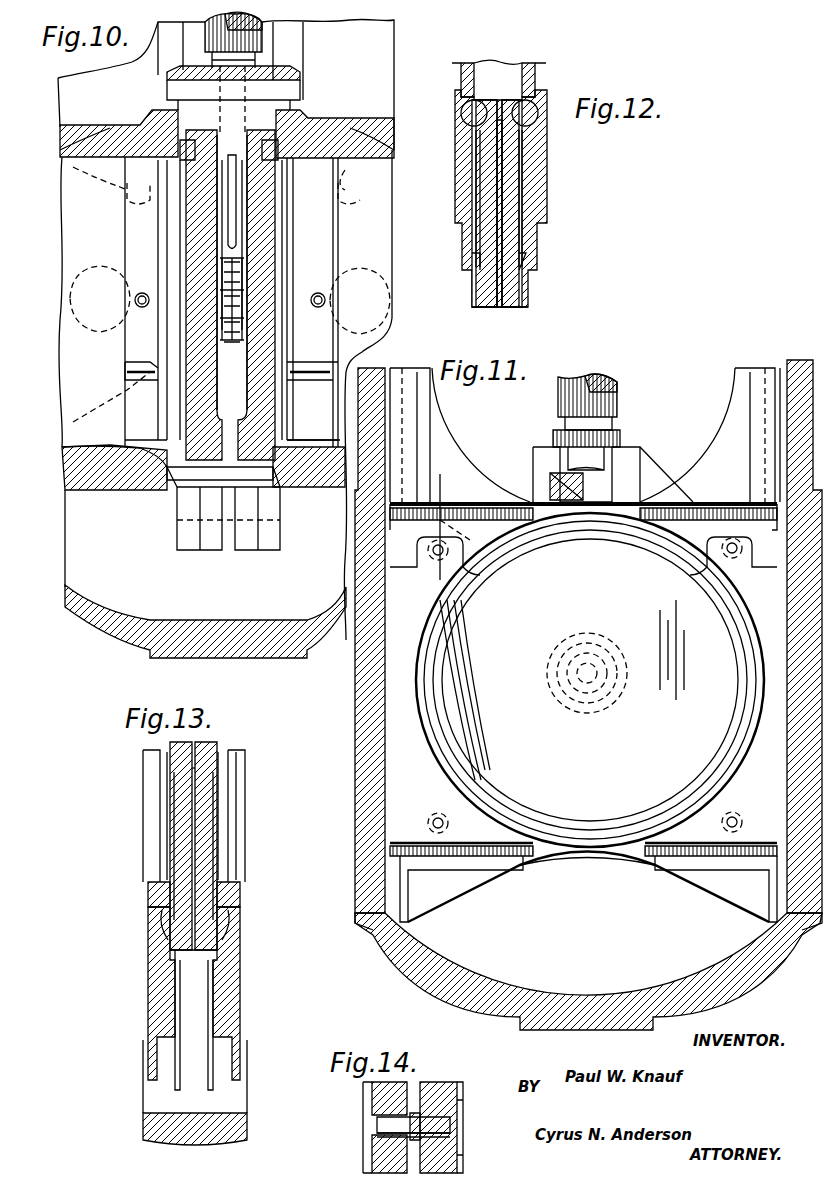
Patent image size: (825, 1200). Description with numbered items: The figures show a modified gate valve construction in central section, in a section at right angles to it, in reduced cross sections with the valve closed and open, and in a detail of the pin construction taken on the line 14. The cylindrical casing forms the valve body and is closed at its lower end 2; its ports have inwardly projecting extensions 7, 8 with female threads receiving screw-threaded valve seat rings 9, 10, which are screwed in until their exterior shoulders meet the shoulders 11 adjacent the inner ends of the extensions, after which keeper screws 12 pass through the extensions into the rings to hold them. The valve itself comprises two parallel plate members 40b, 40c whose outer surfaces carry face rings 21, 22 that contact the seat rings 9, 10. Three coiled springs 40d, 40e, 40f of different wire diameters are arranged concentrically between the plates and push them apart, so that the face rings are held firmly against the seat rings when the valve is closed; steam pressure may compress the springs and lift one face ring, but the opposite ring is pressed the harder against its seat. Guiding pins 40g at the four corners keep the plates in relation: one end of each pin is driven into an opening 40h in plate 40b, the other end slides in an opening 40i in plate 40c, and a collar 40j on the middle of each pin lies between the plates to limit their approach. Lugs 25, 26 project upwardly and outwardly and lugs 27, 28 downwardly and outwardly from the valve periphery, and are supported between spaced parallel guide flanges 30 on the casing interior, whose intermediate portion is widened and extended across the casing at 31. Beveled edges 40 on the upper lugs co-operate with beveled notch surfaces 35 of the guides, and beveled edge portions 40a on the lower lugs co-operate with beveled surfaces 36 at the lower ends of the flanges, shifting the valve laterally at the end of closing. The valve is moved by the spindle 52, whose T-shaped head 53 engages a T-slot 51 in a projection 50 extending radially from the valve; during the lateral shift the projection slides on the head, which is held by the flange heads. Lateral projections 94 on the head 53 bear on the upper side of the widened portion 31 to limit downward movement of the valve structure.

In FIG. 10, the closed lower end 2 is at (108, 620).
In FIG. 11, the closed lower end 2 is at (357, 744).
In FIG. 10, the inwardly projecting extension 7 is at (330, 490).
In FIG. 10, the inwardly projecting extension 8 is at (92, 470).
In FIG. 10, the valve seat ring 9 is at (300, 455).
In FIG. 10, the valve seat ring 10 is at (118, 488).
In FIG. 10, the shoulder 11 is at (140, 478).
In FIG. 10, the keeper screw 12 is at (138, 302).
In FIG. 11, the keeper screw 12 is at (398, 520).
In FIG. 11, the section line 14 is at (430, 478).
In FIG. 10, the face ring 21 is at (328, 140).
In FIG. 10, the face ring 22 is at (180, 148).
In FIG. 11, the face ring 22 is at (645, 502).
In FIG. 11, the lug 25 is at (435, 547).
In FIG. 11, the lug 26 is at (733, 546).
In FIG. 11, the lug 27 is at (461, 882).
In FIG. 11, the lug 28 is at (711, 882).
In FIG. 10, the guide flange 30 is at (175, 40).
In FIG. 12, the guide flange 30 is at (480, 60).
In FIG. 11, the guide flange 30 is at (425, 388).
In FIG. 13, the guide flange 30 is at (152, 782).
In FIG. 10, the widened central portion 31 is at (150, 112).
In FIG. 10, the beveled surface 35 is at (185, 140).
In FIG. 12, the beveled surface 35 is at (460, 78).
In FIG. 13, the beveled surface 35 is at (150, 896).
In FIG. 10, the beveled surface 36 is at (160, 420).
In FIG. 12, the beveled surface 36 is at (470, 262).
In FIG. 13, the beveled surface 36 is at (172, 1082).
In FIG. 10, the beveled edge 40 is at (187, 140).
In FIG. 12, the beveled edge 40 is at (465, 120).
In FIG. 11, the beveled edge 40 is at (470, 500).
In FIG. 13, the beveled edge 40 is at (168, 745).
In FIG. 14, the beveled edge 40 is at (365, 1085).
In FIG. 10, the beveled edge portion 40a is at (178, 478).
In FIG. 12, the beveled edge portion 40a is at (472, 280).
In FIG. 11, the beveled edge portion 40a is at (500, 852).
In FIG. 13, the beveled edge portion 40a is at (162, 915).
In FIG. 10, the plate member 40b is at (265, 236).
In FIG. 12, the plate member 40b is at (515, 182).
In FIG. 13, the plate member 40b is at (212, 824).
In FIG. 14, the plate member 40b is at (440, 1095).
In FIG. 10, the plate member 40c is at (190, 225).
In FIG. 12, the plate member 40c is at (478, 185).
In FIG. 11, the plate member 40c is at (562, 690).
In FIG. 13, the plate member 40c is at (178, 822).
In FIG. 14, the plate member 40c is at (380, 1100).
In FIG. 10, the coiled spring 40d is at (200, 250).
In FIG. 11, the coiled spring 40d is at (555, 648).
In FIG. 10, the coiled spring 40e is at (200, 278).
In FIG. 11, the coiled spring 40e is at (560, 676).
In FIG. 10, the coiled spring 40f is at (200, 330).
In FIG. 11, the coiled spring 40f is at (575, 682).
In FIG. 11, the guiding pin 40g is at (445, 554).
In FIG. 14, the guiding pin 40g is at (455, 1100).
In FIG. 14, the opening 40h is at (462, 1145).
In FIG. 14, the opening 40i is at (375, 1128).
In FIG. 14, the collar 40j is at (400, 1135).
In FIG. 11, the projection 50 is at (568, 470).
In FIG. 11, the T-slot 51 is at (555, 480).
In FIG. 10, the valve spindle 52 is at (233, 40).
In FIG. 11, the valve spindle 52 is at (560, 393).
In FIG. 11, the T-shaped head 53 is at (552, 486).
In FIG. 10, the lateral projection 94 is at (178, 70).
In FIG. 11, the lateral projection 94 is at (597, 457).